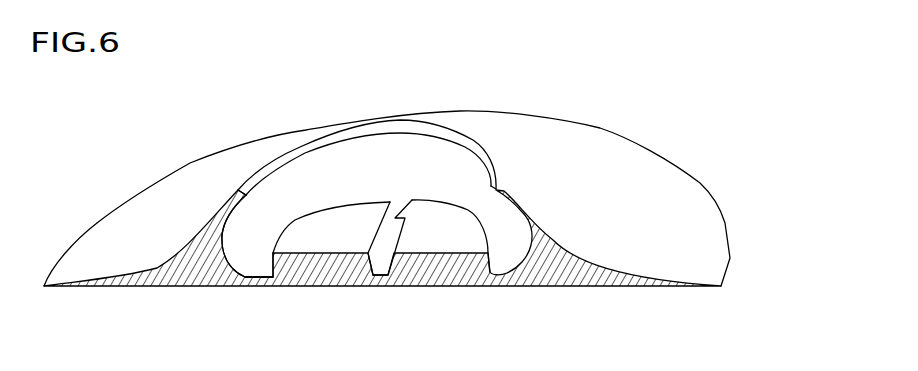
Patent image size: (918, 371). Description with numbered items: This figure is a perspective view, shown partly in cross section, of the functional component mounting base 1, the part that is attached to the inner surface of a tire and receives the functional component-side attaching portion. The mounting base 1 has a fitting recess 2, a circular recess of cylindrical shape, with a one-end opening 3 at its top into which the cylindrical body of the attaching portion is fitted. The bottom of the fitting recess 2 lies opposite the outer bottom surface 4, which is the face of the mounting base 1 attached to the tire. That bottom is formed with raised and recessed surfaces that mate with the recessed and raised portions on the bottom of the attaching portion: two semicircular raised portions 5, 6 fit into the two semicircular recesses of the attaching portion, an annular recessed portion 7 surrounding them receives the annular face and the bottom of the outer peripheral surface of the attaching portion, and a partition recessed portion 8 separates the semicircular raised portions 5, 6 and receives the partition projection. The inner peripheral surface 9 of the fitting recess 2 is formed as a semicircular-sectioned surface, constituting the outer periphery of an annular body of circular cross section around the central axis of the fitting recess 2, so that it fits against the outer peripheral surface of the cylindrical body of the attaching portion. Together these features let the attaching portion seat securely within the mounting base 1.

The functional component mounting base 1 is at (666, 157).
The fitting recess 2 is at (382, 157).
The one-end opening 3 is at (474, 147).
The outer bottom surface 4 is at (512, 287).
The semicircular raised portion 5 is at (333, 233).
The semicircular raised portion 6 is at (453, 248).
The annular recessed portion 7 is at (265, 262).
The partition recessed portion 8 is at (378, 276).
The inner peripheral surface 9 is at (230, 222).